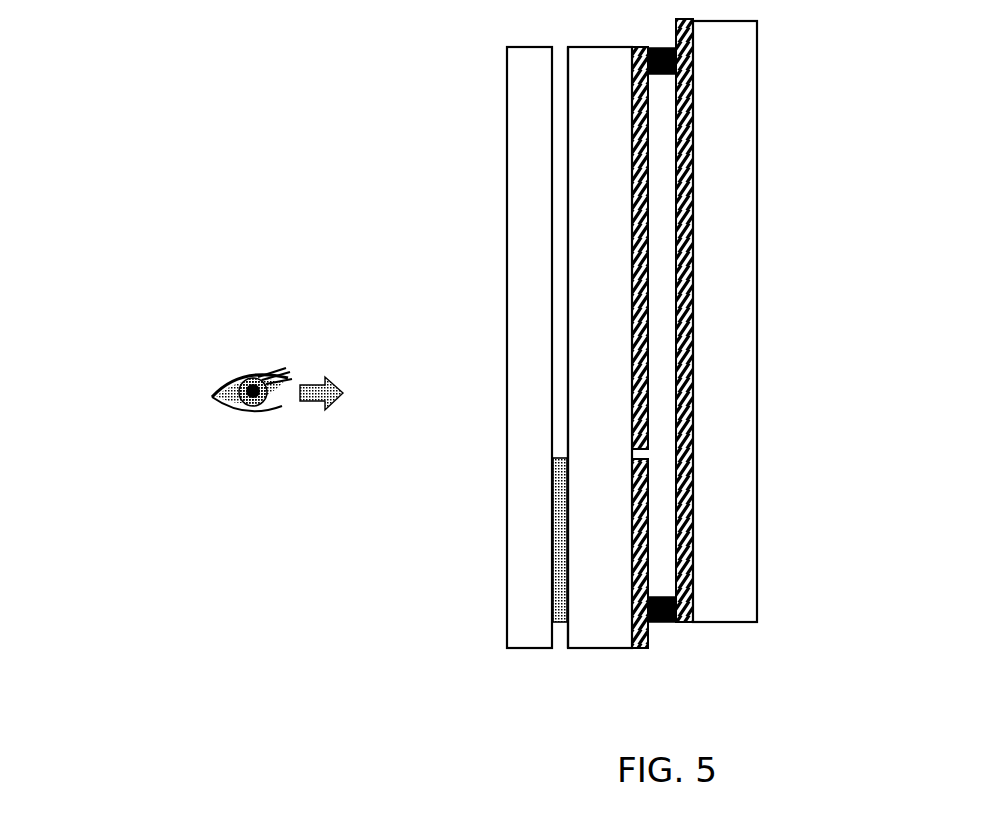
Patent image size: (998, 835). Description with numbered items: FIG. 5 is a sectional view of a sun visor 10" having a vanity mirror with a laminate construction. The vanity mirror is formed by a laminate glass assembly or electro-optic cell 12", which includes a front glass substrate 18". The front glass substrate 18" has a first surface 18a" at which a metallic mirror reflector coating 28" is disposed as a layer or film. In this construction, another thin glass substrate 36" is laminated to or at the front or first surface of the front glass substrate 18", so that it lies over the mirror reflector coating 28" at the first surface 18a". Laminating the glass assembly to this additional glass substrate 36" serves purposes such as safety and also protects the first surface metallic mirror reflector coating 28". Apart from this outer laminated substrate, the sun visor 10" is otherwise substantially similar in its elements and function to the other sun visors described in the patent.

The sun visor 10 is at (358, 277).
The electro-optic cell 12 is at (800, 237).
The front glass substrate 18 is at (583, 104).
The first surface 18a is at (568, 185).
The mirror reflector coating 28 is at (557, 585).
The thin glass substrate 36 is at (500, 453).